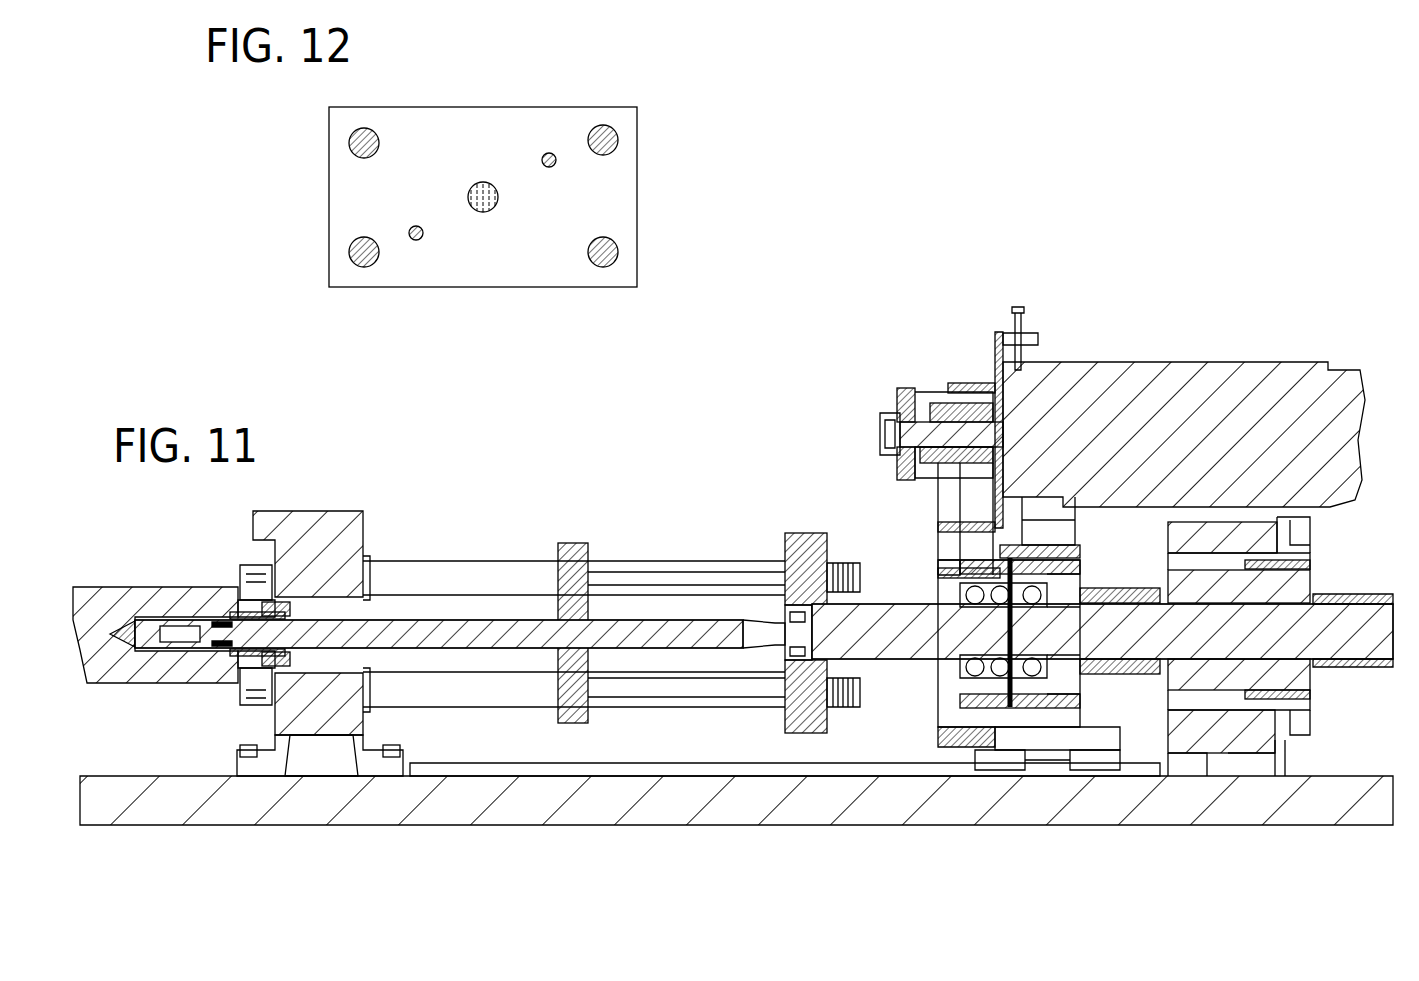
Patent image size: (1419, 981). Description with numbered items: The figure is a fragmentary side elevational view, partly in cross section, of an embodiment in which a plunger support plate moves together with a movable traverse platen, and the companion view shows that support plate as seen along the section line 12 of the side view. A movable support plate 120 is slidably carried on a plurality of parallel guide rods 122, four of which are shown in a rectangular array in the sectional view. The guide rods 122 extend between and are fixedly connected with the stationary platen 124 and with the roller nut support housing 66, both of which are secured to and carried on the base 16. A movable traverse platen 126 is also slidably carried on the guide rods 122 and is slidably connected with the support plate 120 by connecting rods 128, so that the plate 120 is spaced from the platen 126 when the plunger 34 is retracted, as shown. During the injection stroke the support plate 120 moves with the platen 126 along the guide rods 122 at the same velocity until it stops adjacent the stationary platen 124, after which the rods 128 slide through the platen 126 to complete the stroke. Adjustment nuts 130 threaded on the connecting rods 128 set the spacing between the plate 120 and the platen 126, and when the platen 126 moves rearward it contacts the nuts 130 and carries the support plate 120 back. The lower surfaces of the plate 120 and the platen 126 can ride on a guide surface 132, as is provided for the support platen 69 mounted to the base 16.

In FIG. 11, the section line 12- 12 is at (557, 738).
In FIG. 11, the base 16 is at (818, 808).
In FIG. 12, the plunger 34 is at (476, 193).
In FIG. 11, the plunger 34 is at (475, 640).
In FIG. 11, the support housing 66 is at (1255, 737).
In FIG. 11, the support platen 69 is at (1053, 740).
In FIG. 12, the movable support plate 120 is at (430, 112).
In FIG. 11, the movable support plate 120 is at (578, 555).
In FIG. 12, the guide rods 122 is at (352, 146).
In FIG. 11, the guide rods 122 is at (398, 572).
In FIG. 11, the stationary platen 124 is at (303, 517).
In FIG. 11, the movable traverse platen 126 is at (808, 538).
In FIG. 12, the connecting rods 128 is at (545, 155).
In FIG. 11, the connecting rods 128 is at (655, 577).
In FIG. 11, the adjustment nuts 130 is at (828, 565).
In FIG. 11, the guide surface 132 is at (437, 777).